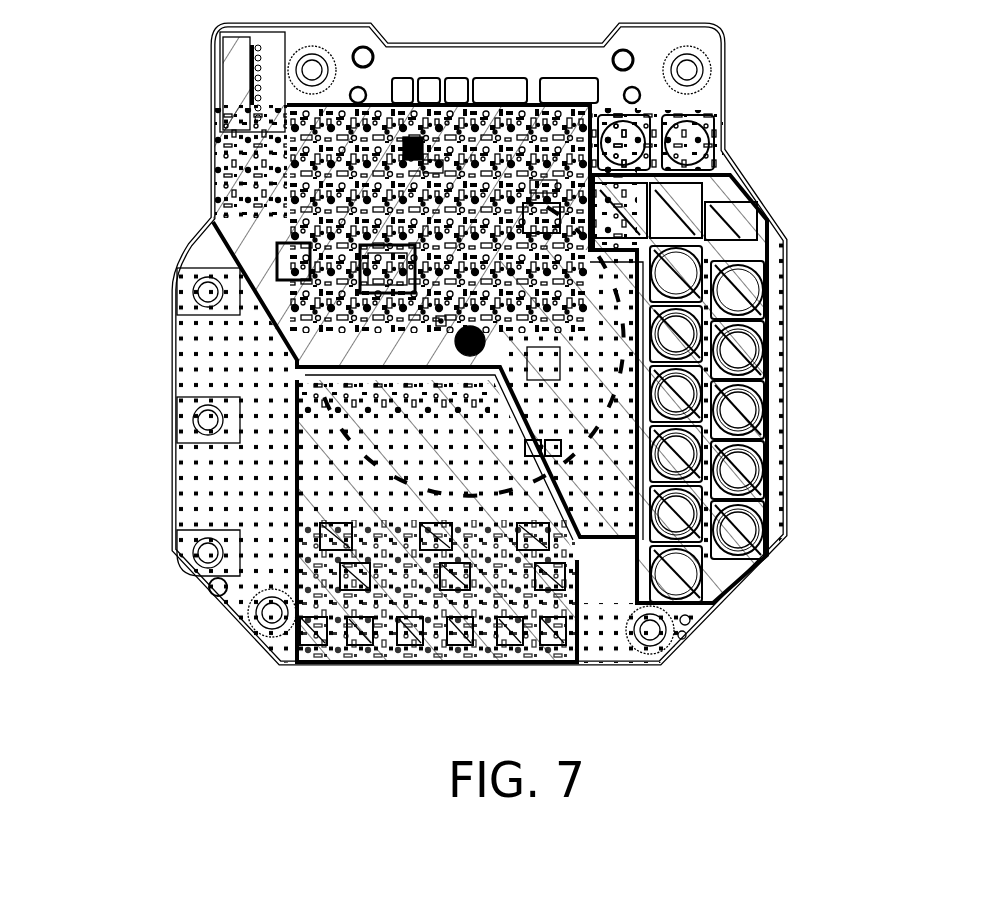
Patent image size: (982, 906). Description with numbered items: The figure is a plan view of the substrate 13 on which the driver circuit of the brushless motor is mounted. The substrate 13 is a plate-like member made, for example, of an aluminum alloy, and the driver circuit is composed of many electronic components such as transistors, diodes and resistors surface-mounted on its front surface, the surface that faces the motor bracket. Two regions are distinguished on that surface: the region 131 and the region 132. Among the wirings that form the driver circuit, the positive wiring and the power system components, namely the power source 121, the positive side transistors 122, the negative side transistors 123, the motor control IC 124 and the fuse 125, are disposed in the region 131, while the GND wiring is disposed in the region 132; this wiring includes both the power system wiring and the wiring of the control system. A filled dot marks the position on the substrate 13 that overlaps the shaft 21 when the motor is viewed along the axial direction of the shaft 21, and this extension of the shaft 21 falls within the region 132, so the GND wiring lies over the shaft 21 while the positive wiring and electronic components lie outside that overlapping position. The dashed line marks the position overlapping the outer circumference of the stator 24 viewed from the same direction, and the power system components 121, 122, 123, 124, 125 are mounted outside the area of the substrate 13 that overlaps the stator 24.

The substrate 13 is at (178, 420).
The shaft 21 is at (458, 343).
The stator 24 is at (350, 413).
The power source 121 is at (798, 163).
The positive side transistors 122 is at (707, 342).
The negative side transistors 123 is at (707, 402).
The motor control IC 124 is at (707, 462).
The fuse 125 is at (707, 522).
The region 131 is at (410, 662).
The region 132 is at (217, 124).